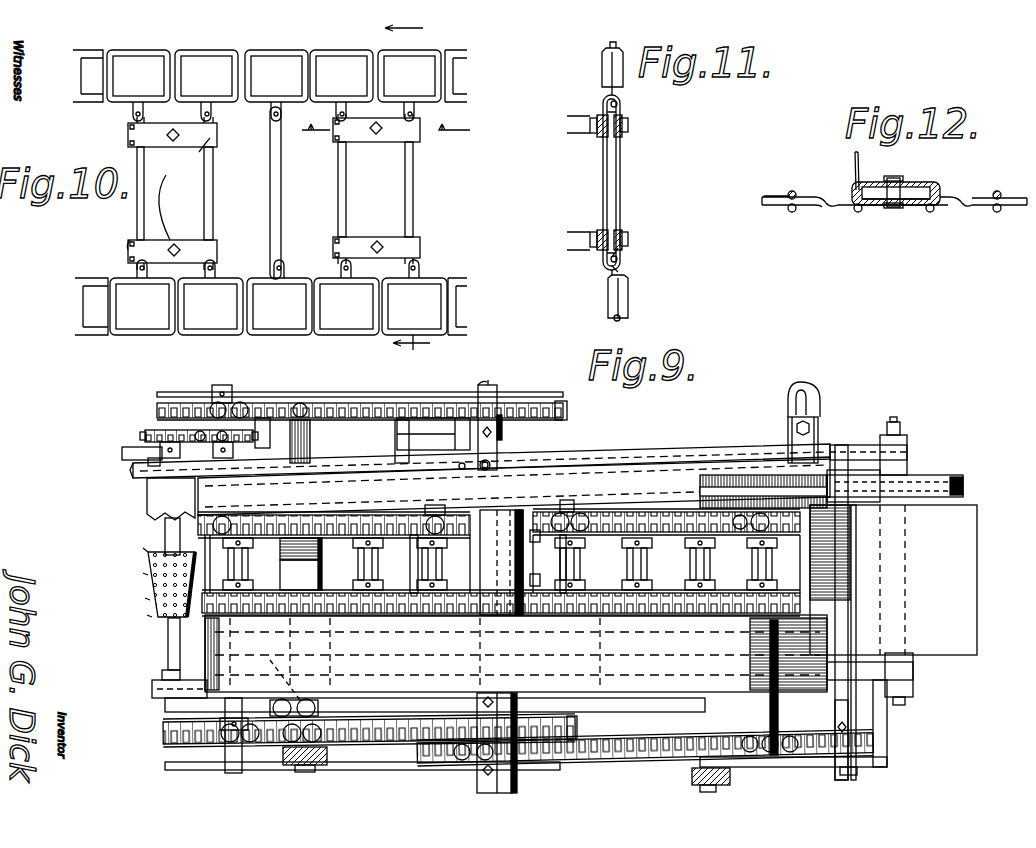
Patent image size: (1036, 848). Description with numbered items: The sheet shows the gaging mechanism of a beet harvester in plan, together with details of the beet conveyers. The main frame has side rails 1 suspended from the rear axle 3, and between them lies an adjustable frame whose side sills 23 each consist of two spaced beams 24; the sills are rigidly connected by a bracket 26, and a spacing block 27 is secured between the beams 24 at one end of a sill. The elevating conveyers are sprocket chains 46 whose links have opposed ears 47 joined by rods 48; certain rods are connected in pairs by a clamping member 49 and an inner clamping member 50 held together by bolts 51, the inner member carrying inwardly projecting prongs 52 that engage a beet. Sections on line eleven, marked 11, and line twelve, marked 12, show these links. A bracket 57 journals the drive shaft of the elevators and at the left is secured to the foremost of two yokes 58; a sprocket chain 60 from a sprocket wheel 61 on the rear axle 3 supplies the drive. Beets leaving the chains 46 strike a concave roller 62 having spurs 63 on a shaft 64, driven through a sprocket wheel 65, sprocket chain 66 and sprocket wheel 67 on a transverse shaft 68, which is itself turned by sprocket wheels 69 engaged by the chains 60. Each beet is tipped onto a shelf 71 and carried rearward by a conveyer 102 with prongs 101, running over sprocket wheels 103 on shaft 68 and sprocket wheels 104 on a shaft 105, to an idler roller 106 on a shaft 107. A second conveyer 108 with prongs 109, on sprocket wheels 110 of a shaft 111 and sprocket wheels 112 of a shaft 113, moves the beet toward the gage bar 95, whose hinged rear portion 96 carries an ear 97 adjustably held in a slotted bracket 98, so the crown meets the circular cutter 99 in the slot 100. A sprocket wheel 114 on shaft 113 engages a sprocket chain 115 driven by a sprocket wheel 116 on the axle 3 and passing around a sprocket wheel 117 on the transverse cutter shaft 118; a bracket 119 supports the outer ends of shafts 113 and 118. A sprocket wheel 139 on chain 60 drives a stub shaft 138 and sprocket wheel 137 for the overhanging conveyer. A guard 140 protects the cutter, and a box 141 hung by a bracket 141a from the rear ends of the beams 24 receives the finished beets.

In FIG. 9, the side bars or rails 1 is at (124, 454).
In FIG. 9, the rear axle 3 is at (492, 390).
In FIG. 10, the vertical spindle 11 is at (417, 186).
In FIG. 10, the axle 12 is at (383, 149).
In FIG. 9, the side sills 23 is at (668, 490).
In FIG. 9, the beams 24 is at (140, 472).
In FIG. 9, the bracket 26 is at (312, 570).
In FIG. 9, the spacing block 27 is at (318, 665).
In FIG. 10, the sprocket chains 46 is at (290, 51).
In FIG. 11, the sprocket chains 46 is at (604, 71).
In FIG. 12, the sprocket chains 46 is at (840, 206).
In FIG. 10, the ears 47 is at (268, 110).
In FIG. 11, the ears 47 is at (621, 104).
In FIG. 12, the ears 47 is at (788, 210).
In FIG. 10, the rods 48 is at (260, 175).
In FIG. 11, the rods 48 is at (622, 168).
In FIG. 12, the rods 48 is at (791, 195).
In FIG. 11, the clamping member 49 is at (622, 136).
In FIG. 12, the clamping member 49 is at (915, 207).
In FIG. 10, the inner clamping member 50 is at (200, 150).
In FIG. 11, the inner clamping member 50 is at (600, 135).
In FIG. 12, the inner clamping member 50 is at (921, 186).
In FIG. 10, the bolts 51 is at (172, 140).
In FIG. 11, the bolts 51 is at (628, 121).
In FIG. 12, the bolts 51 is at (892, 209).
In FIG. 10, the prongs 52 is at (132, 260).
In FIG. 11, the prongs 52 is at (570, 130).
In FIG. 12, the prongs 52 is at (855, 165).
In FIG. 9, the bracket 57 is at (326, 395).
In FIG. 9, the yokes 58 is at (300, 762).
In FIG. 9, the sprocket chain 60 is at (366, 402).
In FIG. 9, the sprocket wheel 61 is at (568, 408).
In FIG. 9, the concave roller 62 is at (158, 585).
In FIG. 9, the spurs 63 is at (158, 607).
In FIG. 9, the shaft 64 is at (168, 636).
In FIG. 9, the sprocket wheel 65 is at (143, 437).
In FIG. 9, the sprocket chain 66 is at (185, 442).
In FIG. 9, the sprocket wheel 67 is at (254, 437).
In FIG. 9, the transverse shaft 68 is at (223, 392).
In FIG. 9, the sprocket wheels 69 is at (242, 406).
In FIG. 9, the shelf 71 is at (150, 507).
In FIG. 9, the gage bar 95 is at (345, 465).
In FIG. 9, the hinged rear portion 96 is at (632, 462).
In FIG. 9, the ear 97 is at (820, 420).
In FIG. 9, the slotted bracket 98 is at (813, 386).
In FIG. 9, the circular cutter 99 is at (752, 476).
In FIG. 9, the slot 100 is at (718, 484).
In FIG. 9, the prongs 101 is at (164, 542).
In FIG. 9, the conveyer 102 is at (348, 520).
In FIG. 9, the sprocket wheels 103 is at (215, 523).
In FIG. 9, the sprocket wheels 104 is at (431, 517).
In FIG. 9, the shaft 105 is at (416, 600).
In FIG. 9, the idler roller 106 is at (494, 602).
In FIG. 9, the shaft 107 is at (511, 602).
In FIG. 9, the conveyer 108 is at (625, 518).
In FIG. 9, the prongs 109 is at (536, 537).
In FIG. 9, the sprocket wheels 110 is at (566, 520).
In FIG. 9, the shaft 111 is at (566, 602).
In FIG. 9, the sprocket wheels 112 is at (748, 604).
In FIG. 9, the shaft 113 is at (780, 698).
In FIG. 9, the sprocket wheel 114 is at (778, 742).
In FIG. 9, the sprocket chain 115 is at (630, 758).
In FIG. 9, the sprocket wheel 116 is at (520, 755).
In FIG. 9, the sprocket wheel 117 is at (845, 750).
In FIG. 9, the transverse shaft 118 is at (858, 773).
In FIG. 9, the bracket 119 is at (782, 766).
In FIG. 9, the sprocket wheel 137 is at (320, 708).
In FIG. 9, the stub shaft 138 is at (300, 662).
In FIG. 9, the sprocket wheel 139 is at (300, 402).
In FIG. 9, the guard 140 is at (963, 484).
In FIG. 9, the box 141 is at (978, 548).
In FIG. 9, the bracket 141a is at (908, 466).